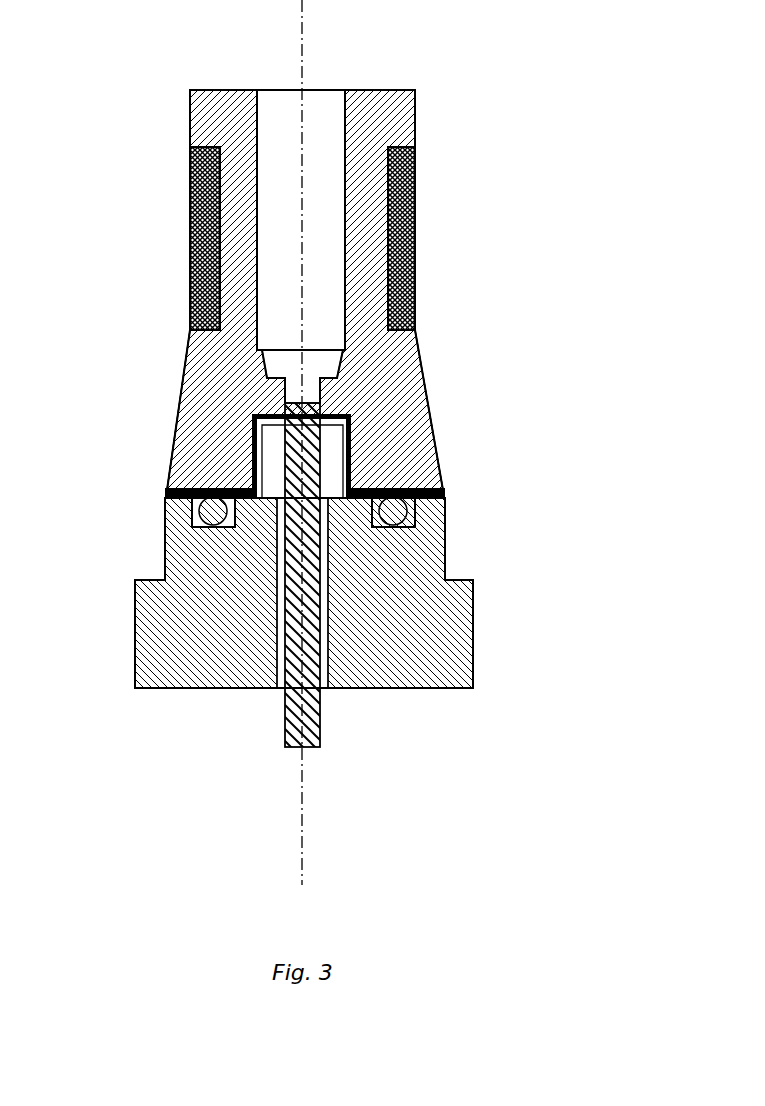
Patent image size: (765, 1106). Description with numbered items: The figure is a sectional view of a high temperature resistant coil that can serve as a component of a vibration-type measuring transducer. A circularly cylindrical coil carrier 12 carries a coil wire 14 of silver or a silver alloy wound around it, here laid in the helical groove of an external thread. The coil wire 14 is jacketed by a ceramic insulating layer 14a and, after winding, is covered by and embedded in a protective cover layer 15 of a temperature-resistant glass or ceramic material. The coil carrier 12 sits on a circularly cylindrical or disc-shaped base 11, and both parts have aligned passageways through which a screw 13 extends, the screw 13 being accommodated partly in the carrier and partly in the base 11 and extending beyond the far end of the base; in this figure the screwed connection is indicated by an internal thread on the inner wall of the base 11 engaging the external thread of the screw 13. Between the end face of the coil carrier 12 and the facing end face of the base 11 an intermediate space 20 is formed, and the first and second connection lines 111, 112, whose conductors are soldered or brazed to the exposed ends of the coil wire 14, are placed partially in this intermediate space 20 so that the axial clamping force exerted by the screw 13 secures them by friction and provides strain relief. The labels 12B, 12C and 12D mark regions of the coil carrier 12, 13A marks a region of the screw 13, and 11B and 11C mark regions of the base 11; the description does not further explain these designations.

The base 11 is at (222, 623).
The body shoulder 11B is at (155, 503).
The body shoulder 11C is at (458, 508).
The first connection line 111 is at (195, 518).
The second connection line 112 is at (415, 523).
The coil carrier 12 is at (400, 425).
The bore 12B is at (357, 232).
The upper block portion 12C is at (208, 125).
The conical portion 12D is at (210, 425).
The screw 13 is at (320, 727).
The rod head / tapered seat 13A is at (225, 370).
The coil wire 14 is at (190, 243).
The insulating layer 14a is at (190, 283).
The protective cover layer 15 is at (190, 198).
The intermediate space 20 is at (458, 488).